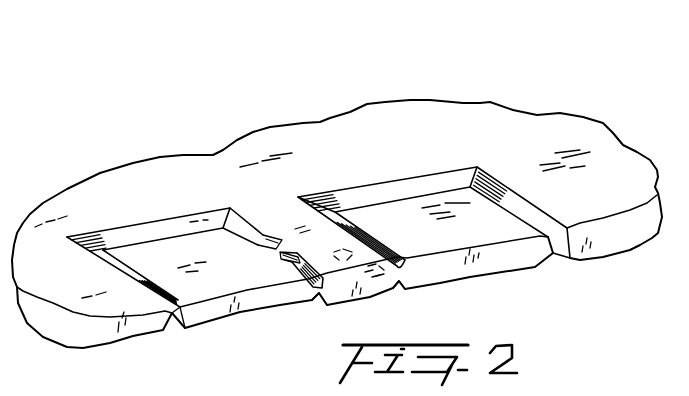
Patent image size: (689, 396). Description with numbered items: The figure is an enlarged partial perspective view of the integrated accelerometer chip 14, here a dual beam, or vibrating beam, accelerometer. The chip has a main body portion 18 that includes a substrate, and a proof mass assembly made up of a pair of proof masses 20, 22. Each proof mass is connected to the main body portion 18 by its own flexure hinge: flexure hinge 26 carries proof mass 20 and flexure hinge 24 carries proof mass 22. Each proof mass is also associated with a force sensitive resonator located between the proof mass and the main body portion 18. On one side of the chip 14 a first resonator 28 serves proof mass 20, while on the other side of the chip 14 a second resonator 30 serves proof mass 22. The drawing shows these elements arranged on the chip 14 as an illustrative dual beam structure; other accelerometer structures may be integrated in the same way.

The integrated accelerometer chip 14 is at (573, 91).
The main body portion 18 is at (323, 132).
The proof mass 20 is at (148, 252).
The proof mass 22 is at (427, 203).
The flexure hinge 24 is at (402, 287).
The flexure hinge 26 is at (322, 298).
The first resonator 28 is at (266, 235).
The second resonator 30 is at (353, 243).